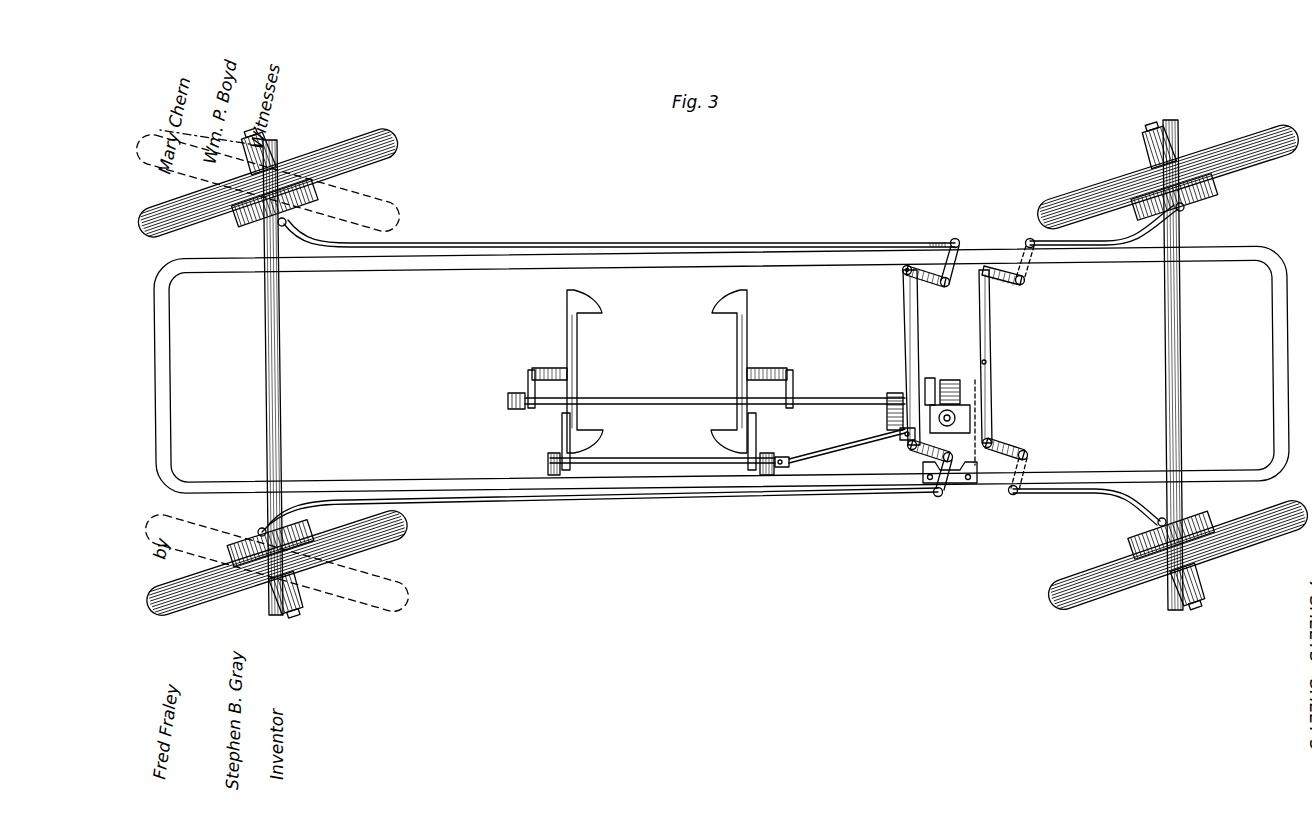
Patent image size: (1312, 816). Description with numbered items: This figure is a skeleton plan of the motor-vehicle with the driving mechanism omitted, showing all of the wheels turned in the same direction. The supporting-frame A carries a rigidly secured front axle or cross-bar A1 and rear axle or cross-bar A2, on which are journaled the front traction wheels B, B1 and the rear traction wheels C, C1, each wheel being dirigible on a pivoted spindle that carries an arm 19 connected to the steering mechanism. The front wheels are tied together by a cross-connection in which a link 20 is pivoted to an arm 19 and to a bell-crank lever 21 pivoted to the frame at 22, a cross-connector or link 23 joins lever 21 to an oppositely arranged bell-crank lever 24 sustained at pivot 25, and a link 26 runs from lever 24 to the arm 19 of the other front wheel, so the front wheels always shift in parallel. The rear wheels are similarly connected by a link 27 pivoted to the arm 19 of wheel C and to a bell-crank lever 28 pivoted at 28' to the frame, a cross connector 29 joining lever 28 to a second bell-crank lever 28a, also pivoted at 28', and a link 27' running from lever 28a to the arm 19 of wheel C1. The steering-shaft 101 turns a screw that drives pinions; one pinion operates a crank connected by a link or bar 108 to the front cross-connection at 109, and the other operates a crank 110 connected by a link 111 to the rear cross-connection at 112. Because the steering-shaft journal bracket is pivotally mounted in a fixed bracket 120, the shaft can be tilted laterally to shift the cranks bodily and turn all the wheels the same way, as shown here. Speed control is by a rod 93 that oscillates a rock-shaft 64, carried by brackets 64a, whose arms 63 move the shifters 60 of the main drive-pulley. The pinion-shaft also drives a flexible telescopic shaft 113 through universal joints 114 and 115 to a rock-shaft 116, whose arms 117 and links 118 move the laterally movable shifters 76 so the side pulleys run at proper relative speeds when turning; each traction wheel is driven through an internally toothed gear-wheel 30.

The supporting-frame A is at (392, 486).
The front axle or cross-bar A1 is at (1185, 412).
The rear axle or cross-bar A2 is at (284, 412).
The front traction wheel B is at (1215, 150).
The front traction wheel B1 is at (1268, 548).
The rear traction wheel C is at (398, 150).
The rear traction wheel C1 is at (400, 648).
The arm 19 is at (288, 221).
The link 20 is at (1124, 248).
The bell-crank lever 21 is at (1026, 278).
The pivot 22 is at (1024, 286).
The cross-connector or link 23 is at (992, 385).
The bell-crank lever 24 is at (1012, 446).
The pivot 25 is at (1032, 452).
The link 26 is at (1068, 496).
The link 27 is at (619, 227).
The link 27' is at (600, 514).
The bell-crank lever 28 is at (932, 290).
The pivot 28' is at (979, 361).
The bell-crank lever 28a is at (930, 496).
The cross connector 29 is at (904, 345).
The gear-wheel 30 is at (880, 494).
The shifter 60 is at (548, 367).
The arm 63 is at (527, 386).
The rock-shaft 64 is at (666, 399).
The bracket 64a is at (507, 403).
The shifter 76 is at (580, 360).
The rod 93 is at (886, 414).
The steering-shaft 101 is at (958, 420).
The link or bar 108 is at (988, 364).
The connection point 109 is at (992, 262).
The crank 110 is at (940, 382).
The link 111 is at (922, 338).
The connection point 112 is at (902, 274).
The flexible telescopic shaft 113 is at (832, 466).
The universal joint 114 is at (900, 440).
The universal joint 115 is at (784, 470).
The rock-shaft 116 is at (688, 466).
The arm 117 is at (560, 477).
The link 118 is at (560, 433).
The fixed bracket 120 is at (1000, 484).